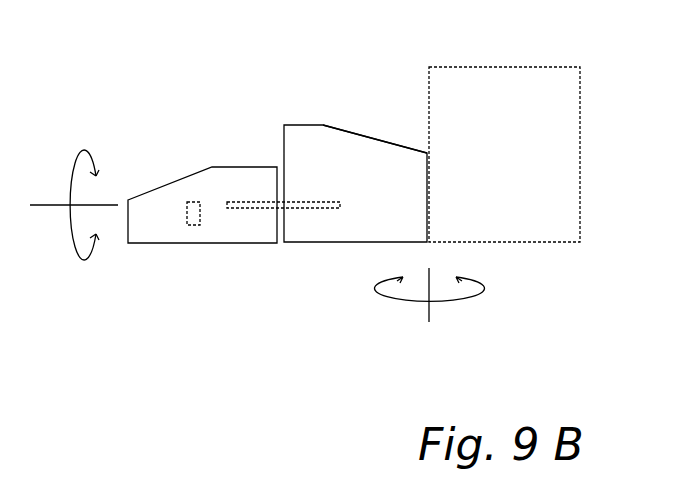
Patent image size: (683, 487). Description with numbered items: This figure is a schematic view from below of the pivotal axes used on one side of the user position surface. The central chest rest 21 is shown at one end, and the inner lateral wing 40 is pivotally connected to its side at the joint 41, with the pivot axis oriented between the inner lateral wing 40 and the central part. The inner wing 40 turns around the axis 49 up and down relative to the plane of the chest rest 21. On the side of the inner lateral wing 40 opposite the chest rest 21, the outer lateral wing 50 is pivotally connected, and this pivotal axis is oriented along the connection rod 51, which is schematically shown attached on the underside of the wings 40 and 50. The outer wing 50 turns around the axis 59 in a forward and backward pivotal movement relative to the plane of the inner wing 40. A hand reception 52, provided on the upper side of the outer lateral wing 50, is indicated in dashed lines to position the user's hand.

The central chest rest 21 is at (500, 93).
The inner lateral wing 40 is at (336, 146).
The joint 41 is at (428, 180).
The axis 49 is at (431, 311).
The outer lateral wing 50 is at (216, 178).
The connection rod 51 is at (262, 205).
The hand reception 52 is at (200, 213).
The axis 59 is at (64, 205).